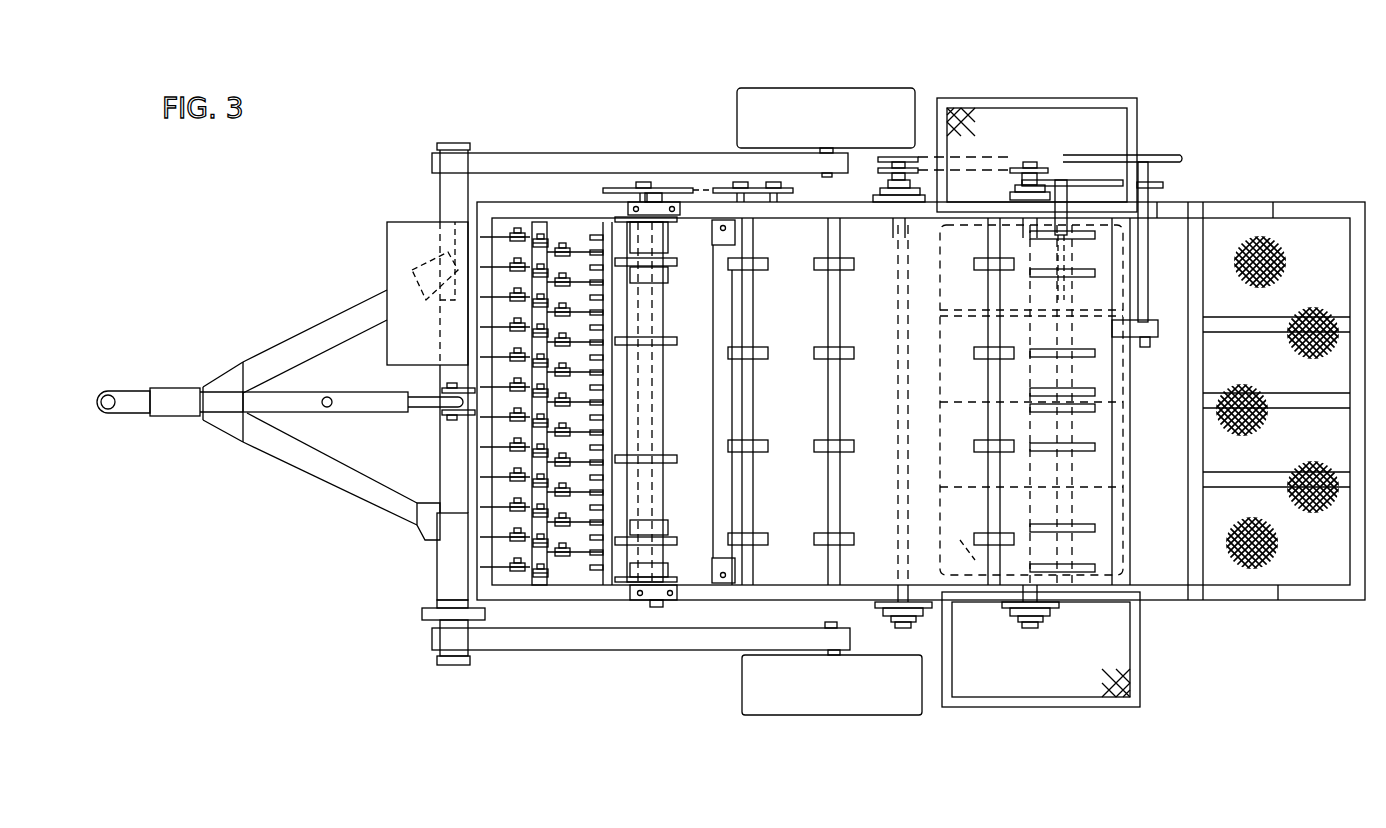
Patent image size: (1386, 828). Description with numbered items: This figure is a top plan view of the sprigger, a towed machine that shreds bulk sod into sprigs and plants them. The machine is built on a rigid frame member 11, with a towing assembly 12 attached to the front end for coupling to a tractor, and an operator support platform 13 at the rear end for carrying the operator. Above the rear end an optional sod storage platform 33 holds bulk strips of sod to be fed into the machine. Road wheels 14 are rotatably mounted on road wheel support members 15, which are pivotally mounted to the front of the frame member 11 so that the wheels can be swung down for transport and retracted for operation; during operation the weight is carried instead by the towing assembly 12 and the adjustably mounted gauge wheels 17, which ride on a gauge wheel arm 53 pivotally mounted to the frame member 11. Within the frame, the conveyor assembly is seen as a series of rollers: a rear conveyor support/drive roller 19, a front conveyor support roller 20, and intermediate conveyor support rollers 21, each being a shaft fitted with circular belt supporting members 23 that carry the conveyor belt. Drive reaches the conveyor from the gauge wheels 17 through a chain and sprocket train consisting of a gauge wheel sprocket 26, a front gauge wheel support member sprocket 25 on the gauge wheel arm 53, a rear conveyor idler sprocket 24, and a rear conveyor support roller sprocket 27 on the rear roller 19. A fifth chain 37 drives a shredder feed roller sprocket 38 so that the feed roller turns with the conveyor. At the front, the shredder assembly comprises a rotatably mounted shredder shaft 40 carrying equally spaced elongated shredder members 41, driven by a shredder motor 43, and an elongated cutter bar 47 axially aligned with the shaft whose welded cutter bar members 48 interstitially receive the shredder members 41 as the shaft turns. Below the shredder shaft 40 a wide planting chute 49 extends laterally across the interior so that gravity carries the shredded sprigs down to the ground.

The rigid frame member 11 is at (757, 602).
The towing assembly 12 is at (167, 408).
The operator support platform 13 is at (1292, 548).
The road wheels 14 is at (887, 118).
The road wheel support members 15 is at (717, 165).
The gauge wheels 17 is at (963, 563).
The rear conveyor support/drive roller 19 is at (1067, 510).
The front conveyor support roller 20 is at (750, 397).
The intermediate conveyor support rollers 21 is at (995, 505).
The circular belt supporting members 23 is at (767, 353).
The rear conveyor idler sprocket 24 is at (1183, 158).
The front gauge wheel support member sprocket 25 is at (912, 157).
The gauge wheel sprocket 26 is at (1040, 168).
The rear conveyor support roller sprocket 27 is at (1078, 183).
The sod storage platform 33 is at (1030, 100).
The fifth chain 37 is at (697, 188).
The shredder feed roller sprocket 38 is at (612, 188).
The shredder shaft 40 is at (545, 565).
The shredder members 41 is at (497, 237).
The shredder motor 43 is at (447, 572).
The cutter bar 47 is at (622, 305).
The cutter bar members 48 is at (590, 243).
The planting chute 49 is at (575, 570).
The gauge wheel arm 53 is at (980, 190).